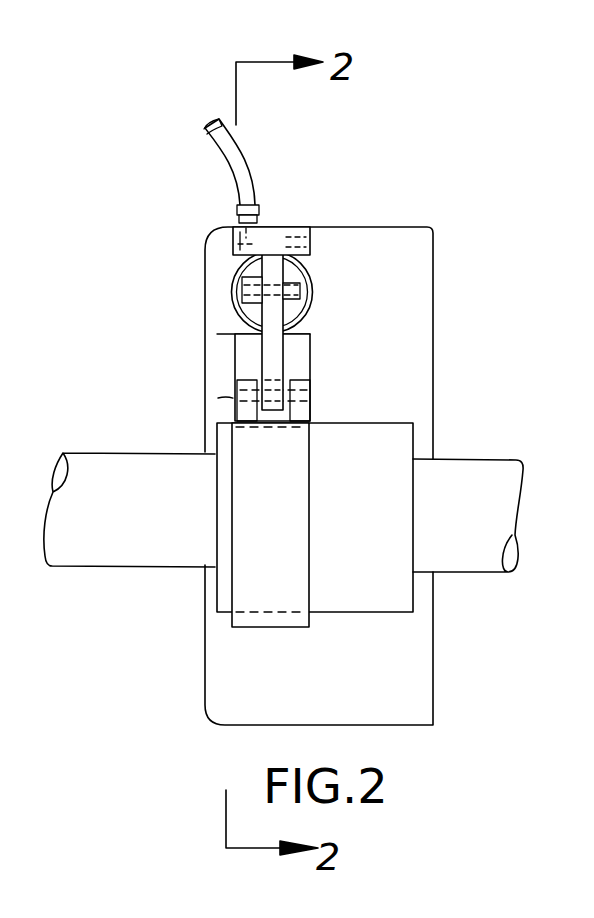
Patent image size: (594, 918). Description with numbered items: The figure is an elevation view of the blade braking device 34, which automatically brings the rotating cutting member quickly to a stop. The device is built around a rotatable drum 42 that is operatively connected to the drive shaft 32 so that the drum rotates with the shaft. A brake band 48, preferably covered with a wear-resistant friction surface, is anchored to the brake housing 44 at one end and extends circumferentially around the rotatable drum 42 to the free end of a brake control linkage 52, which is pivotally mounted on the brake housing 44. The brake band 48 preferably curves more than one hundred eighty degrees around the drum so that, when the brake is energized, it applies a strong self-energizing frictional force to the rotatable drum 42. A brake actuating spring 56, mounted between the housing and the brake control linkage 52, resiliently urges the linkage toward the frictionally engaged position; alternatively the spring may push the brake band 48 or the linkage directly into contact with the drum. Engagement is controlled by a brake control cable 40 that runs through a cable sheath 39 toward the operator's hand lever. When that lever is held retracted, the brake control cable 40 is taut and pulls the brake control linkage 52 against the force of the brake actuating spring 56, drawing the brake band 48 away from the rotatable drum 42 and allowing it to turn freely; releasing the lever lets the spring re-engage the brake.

The drive shaft 32 is at (455, 553).
The blade braking device 34 is at (397, 190).
The cable sheath 39 is at (228, 158).
The brake control cable 40 is at (252, 276).
The rotatable drum 42 is at (388, 450).
The brake housing 44 is at (393, 726).
The brake band 48 is at (296, 627).
The brake control linkage 52 is at (272, 356).
The brake actuating spring 56 is at (312, 285).